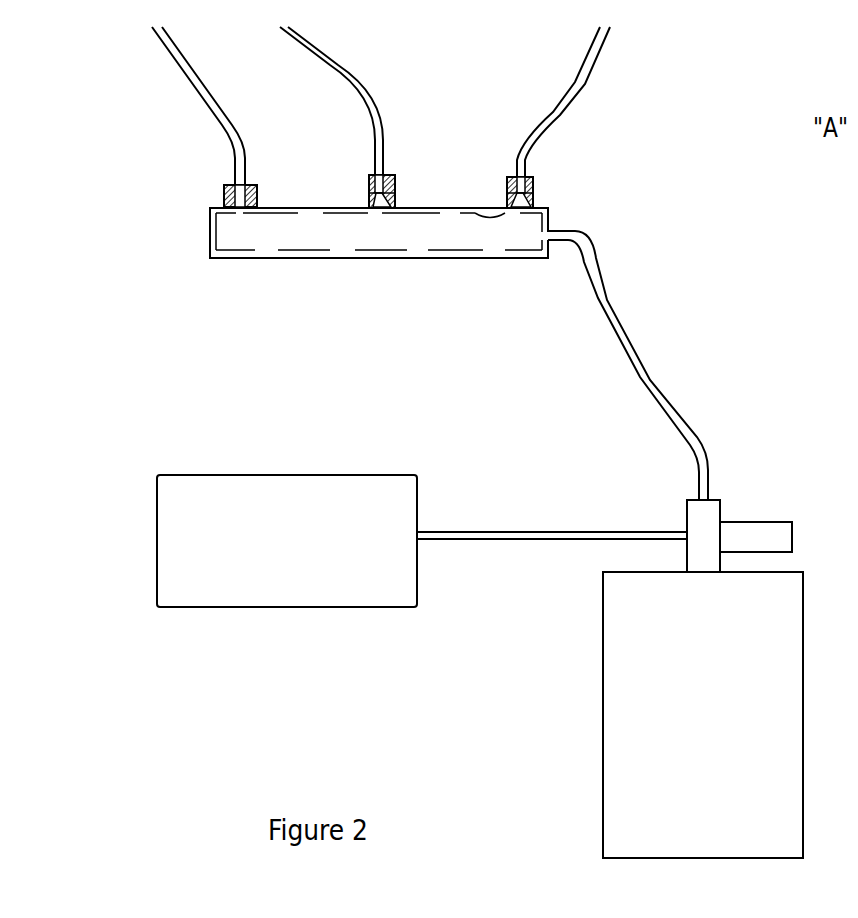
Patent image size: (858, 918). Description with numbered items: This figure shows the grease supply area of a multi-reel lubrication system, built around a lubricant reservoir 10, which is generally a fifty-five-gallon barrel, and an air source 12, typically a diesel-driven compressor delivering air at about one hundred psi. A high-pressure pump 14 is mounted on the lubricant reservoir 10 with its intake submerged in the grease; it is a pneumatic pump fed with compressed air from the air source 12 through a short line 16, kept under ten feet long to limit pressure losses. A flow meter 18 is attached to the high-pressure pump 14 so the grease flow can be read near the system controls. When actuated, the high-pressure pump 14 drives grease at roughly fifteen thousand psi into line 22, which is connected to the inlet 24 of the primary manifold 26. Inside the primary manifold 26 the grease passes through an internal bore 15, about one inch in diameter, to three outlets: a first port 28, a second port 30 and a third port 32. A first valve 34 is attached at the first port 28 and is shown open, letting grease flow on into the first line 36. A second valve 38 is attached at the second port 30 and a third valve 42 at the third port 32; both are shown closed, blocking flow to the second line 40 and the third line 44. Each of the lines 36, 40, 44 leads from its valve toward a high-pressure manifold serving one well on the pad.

The lubricant reservoir 10 is at (637, 675).
The air source 12 is at (234, 565).
The high-pressure pump 14 is at (710, 512).
The internal bore 15 is at (355, 238).
The line 16 is at (527, 537).
The flow meter 18 is at (770, 530).
The line 22 is at (585, 238).
The inlet 24 is at (557, 230).
The primary manifold 26 is at (547, 210).
The first port 28 is at (212, 215).
The second port 30 is at (372, 210).
The third port 32 is at (370, 112).
The first valve 34 is at (227, 193).
The first line 36 is at (200, 102).
The second valve 38 is at (240, 175).
The second line 40 is at (368, 110).
The third valve 42 is at (477, 210).
The third line 44 is at (548, 112).